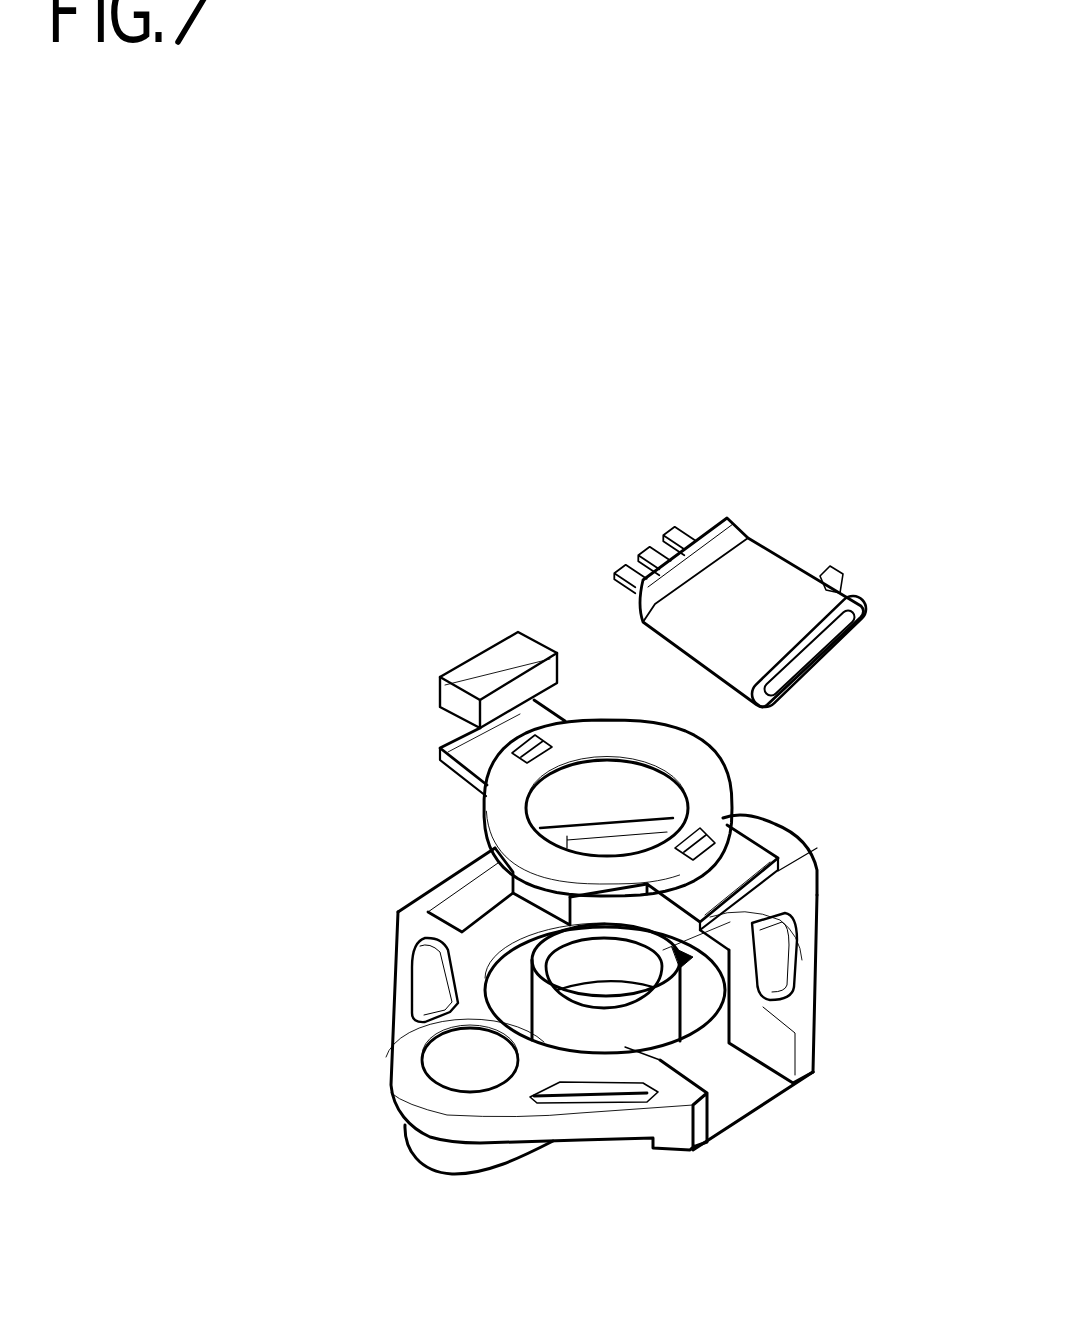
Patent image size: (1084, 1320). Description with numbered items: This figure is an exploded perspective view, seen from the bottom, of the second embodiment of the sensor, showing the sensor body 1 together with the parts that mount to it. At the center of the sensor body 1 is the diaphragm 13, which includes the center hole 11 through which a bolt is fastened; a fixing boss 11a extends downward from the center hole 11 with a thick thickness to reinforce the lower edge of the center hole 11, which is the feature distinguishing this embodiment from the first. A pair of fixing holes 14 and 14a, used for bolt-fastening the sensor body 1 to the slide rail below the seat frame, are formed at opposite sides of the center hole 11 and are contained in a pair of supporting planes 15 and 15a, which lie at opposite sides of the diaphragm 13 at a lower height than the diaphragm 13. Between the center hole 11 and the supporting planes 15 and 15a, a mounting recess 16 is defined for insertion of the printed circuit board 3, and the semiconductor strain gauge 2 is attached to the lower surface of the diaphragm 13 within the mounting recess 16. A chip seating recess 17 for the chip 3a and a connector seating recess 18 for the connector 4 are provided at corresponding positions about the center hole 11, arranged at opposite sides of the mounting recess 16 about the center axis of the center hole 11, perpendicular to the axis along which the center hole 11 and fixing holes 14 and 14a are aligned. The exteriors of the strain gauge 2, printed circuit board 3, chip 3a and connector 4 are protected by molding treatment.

The sensor body 1 is at (624, 995).
The semiconductor strain gauge 2 is at (624, 995).
The printed circuit board 3 is at (710, 762).
The chip 3a is at (483, 657).
The connector 4 is at (778, 563).
The center hole 11 is at (580, 963).
The fixing boss 11a is at (602, 1065).
The diaphragm 13 is at (711, 1043).
The fixing hole 14 is at (455, 1052).
The fixing hole 14a is at (817, 847).
The supporting plane 15 is at (490, 1137).
The supporting plane 15a is at (820, 962).
The mounting recess 16 is at (706, 1010).
The chip seating recess 17 is at (500, 878).
The connector seating recess 18 is at (762, 1073).